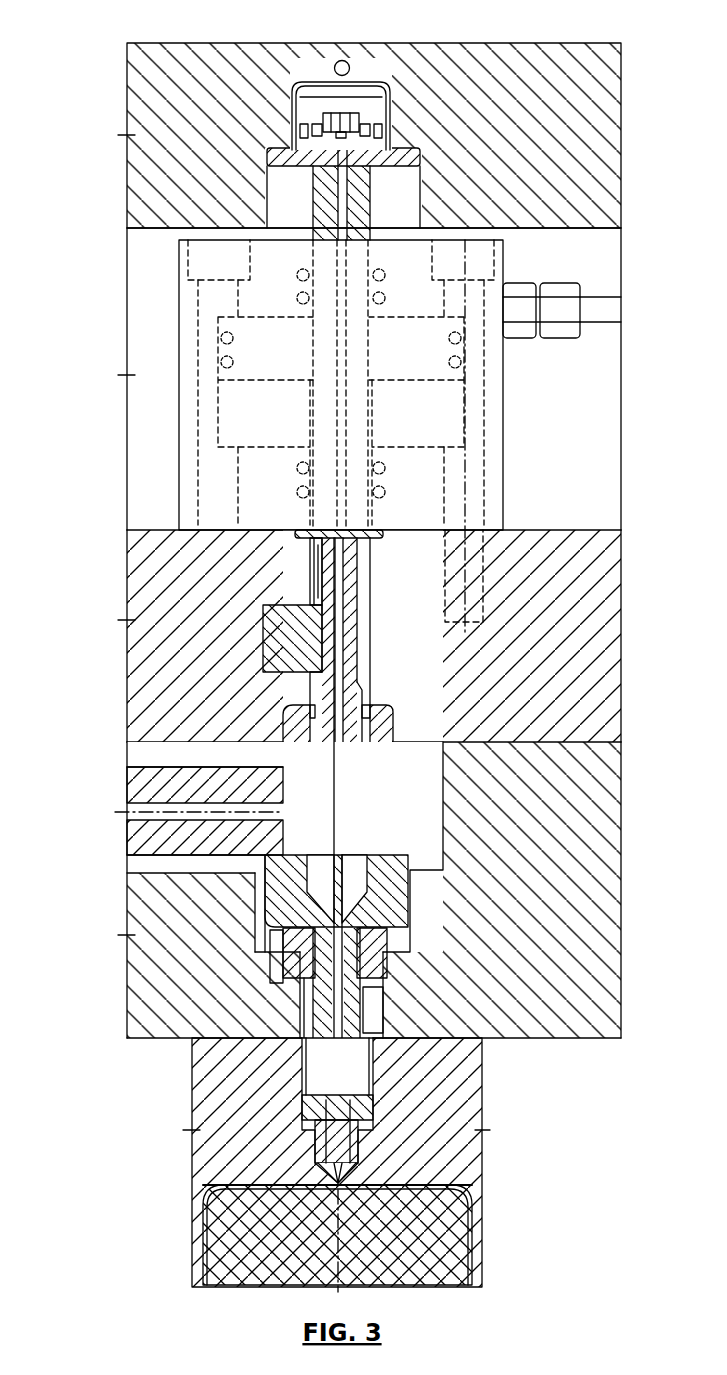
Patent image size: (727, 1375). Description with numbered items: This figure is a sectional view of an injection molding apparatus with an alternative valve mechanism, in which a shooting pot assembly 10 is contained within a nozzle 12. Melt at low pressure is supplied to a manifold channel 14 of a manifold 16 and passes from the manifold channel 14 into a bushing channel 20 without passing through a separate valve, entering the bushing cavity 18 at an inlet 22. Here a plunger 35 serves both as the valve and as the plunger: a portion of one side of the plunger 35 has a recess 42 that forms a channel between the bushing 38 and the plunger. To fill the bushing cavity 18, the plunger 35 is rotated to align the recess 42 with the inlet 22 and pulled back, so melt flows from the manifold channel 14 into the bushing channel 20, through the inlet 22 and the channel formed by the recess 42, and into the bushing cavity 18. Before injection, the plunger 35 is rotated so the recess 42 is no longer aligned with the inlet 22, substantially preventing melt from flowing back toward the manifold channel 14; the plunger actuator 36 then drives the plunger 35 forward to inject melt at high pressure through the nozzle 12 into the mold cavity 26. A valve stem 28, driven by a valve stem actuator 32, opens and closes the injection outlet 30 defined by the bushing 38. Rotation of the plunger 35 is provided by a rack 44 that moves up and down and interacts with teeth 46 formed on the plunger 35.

The shooting pot assembly 10 is at (400, 790).
The nozzle 12 is at (298, 1080).
The manifold channel 14 is at (127, 806).
The manifold 16 is at (128, 770).
The bushing cavity 18 is at (318, 880).
The bushing channel 20 is at (285, 770).
The inlet 22 is at (283, 848).
The mold cavity 26 is at (205, 1195).
The valve stem 28 is at (348, 868).
The injection outlet 30 is at (338, 1186).
The valve stem actuator 32 is at (376, 106).
The plunger 35 is at (400, 718).
The plunger actuator 36 is at (445, 395).
The bushing 38 is at (395, 918).
The recess 42 is at (298, 712).
The rack 44 is at (264, 625).
The teeth 46 is at (311, 573).